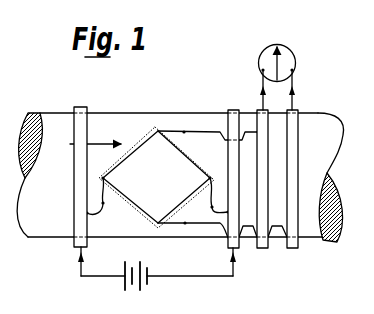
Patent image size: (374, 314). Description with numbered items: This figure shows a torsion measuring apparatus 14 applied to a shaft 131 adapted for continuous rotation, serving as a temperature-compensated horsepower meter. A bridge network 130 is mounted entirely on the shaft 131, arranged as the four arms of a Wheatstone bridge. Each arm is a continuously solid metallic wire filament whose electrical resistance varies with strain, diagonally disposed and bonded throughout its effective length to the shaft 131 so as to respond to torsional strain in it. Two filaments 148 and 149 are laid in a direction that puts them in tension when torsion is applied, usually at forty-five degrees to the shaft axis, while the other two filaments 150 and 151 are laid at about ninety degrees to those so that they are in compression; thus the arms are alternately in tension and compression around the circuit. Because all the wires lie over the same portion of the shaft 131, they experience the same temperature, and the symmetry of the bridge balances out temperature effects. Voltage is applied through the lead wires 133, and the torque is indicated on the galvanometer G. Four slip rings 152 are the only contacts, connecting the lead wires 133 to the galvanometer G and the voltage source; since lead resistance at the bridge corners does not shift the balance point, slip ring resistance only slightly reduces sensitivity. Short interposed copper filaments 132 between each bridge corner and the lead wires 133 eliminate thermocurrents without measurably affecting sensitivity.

The conduit 14 is at (201, 179).
The shaft 131 is at (40, 224).
The bridge network 130 is at (82, 145).
The copper wire 132 is at (177, 130).
The lead wires 133 is at (95, 216).
The tension filament 148 is at (178, 151).
The tension filament 149 is at (152, 194).
The compression filament 150 is at (187, 198).
The compression filament 151 is at (123, 162).
The slip rings 152 is at (80, 114).
The galvanometer G is at (294, 60).